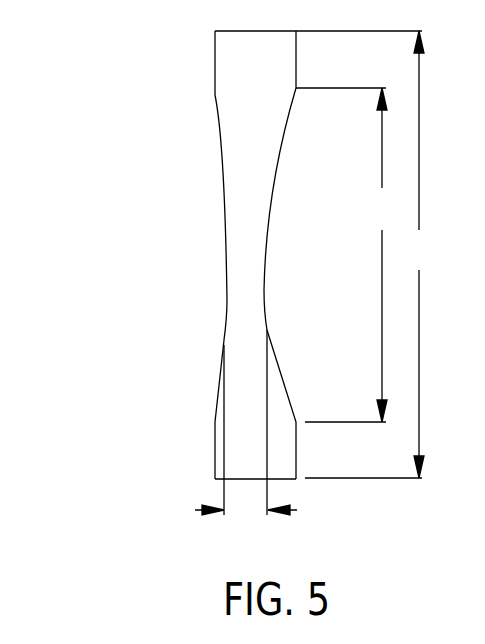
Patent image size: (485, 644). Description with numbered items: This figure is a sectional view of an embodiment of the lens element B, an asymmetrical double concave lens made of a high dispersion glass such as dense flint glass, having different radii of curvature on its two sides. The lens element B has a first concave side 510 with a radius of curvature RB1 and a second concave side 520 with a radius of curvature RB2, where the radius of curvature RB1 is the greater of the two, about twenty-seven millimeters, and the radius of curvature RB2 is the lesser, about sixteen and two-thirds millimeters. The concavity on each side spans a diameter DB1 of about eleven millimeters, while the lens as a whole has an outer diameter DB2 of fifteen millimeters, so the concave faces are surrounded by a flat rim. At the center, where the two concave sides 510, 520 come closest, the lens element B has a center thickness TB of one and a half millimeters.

The first concave side 510 is at (223, 350).
The second concave side 520 is at (282, 137).
The lens element B is at (135, 242).
The radius of curvature RB1 is at (224, 180).
The radius of curvature RB2 is at (278, 378).
The center thickness TB is at (246, 446).
The diameter DB1 is at (347, 255).
The outer diameter DB2 is at (366, 254).